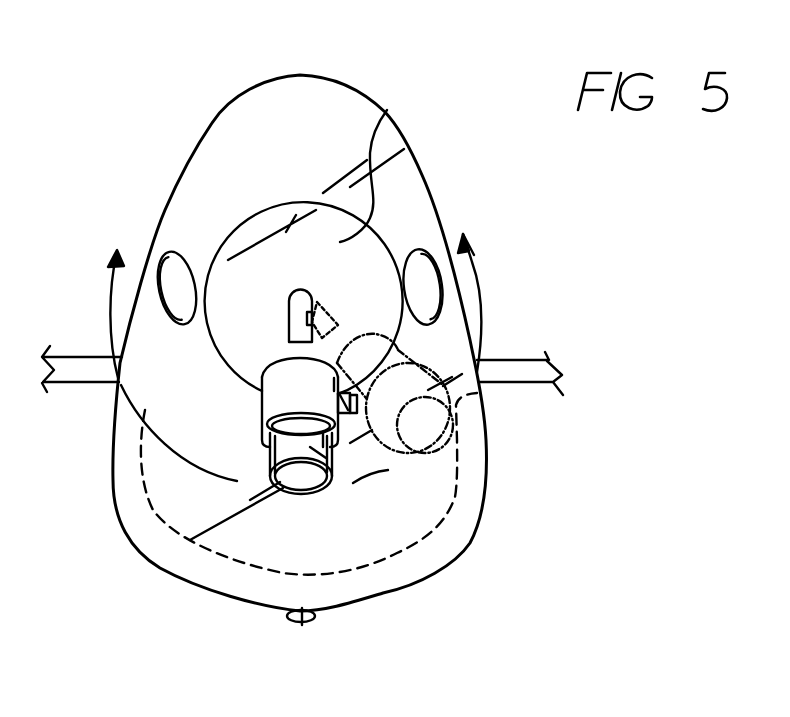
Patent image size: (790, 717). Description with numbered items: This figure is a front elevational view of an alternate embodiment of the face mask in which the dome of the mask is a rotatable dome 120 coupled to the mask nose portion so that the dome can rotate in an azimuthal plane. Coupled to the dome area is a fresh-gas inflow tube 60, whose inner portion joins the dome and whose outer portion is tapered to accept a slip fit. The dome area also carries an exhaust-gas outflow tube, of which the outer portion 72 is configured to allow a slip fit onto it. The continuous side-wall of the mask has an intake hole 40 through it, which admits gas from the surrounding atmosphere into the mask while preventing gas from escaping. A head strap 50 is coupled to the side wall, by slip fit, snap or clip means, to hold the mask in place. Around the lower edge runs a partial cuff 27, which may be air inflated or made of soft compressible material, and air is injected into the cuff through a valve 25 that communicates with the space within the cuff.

The rotatable dome 120 is at (387, 110).
The fresh-gas inflow tube 60 is at (287, 307).
The intake hole 40 is at (177, 283).
The head strap 50 is at (518, 360).
The partial cuff 27 is at (457, 537).
The outer portion of the exhaust-gas outflow tube 72 is at (330, 453).
The valve 25 is at (302, 620).